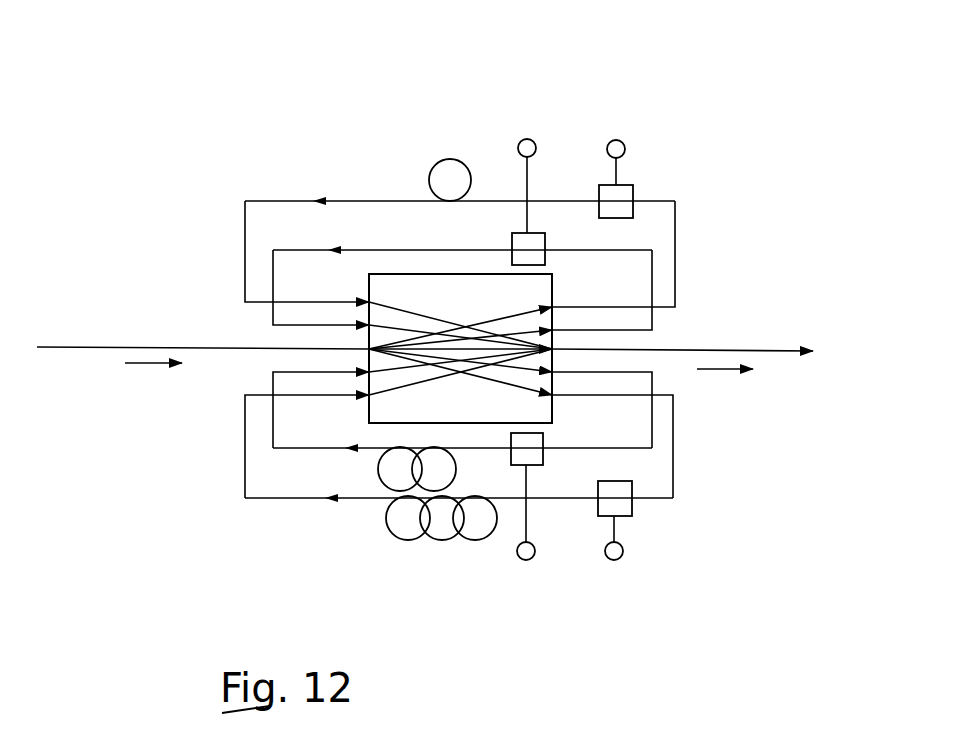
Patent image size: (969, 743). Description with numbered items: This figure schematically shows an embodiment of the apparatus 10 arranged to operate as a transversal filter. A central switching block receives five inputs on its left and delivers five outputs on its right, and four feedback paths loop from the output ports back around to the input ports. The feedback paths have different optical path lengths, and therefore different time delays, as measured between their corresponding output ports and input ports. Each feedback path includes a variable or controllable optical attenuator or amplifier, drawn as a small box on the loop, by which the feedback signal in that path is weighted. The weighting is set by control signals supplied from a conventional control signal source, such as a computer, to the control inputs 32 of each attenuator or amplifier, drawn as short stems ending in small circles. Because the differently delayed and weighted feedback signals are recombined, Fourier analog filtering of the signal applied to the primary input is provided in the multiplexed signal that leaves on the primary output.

The optical switch 10 is at (767, 118).
The control input 32 is at (527, 139).